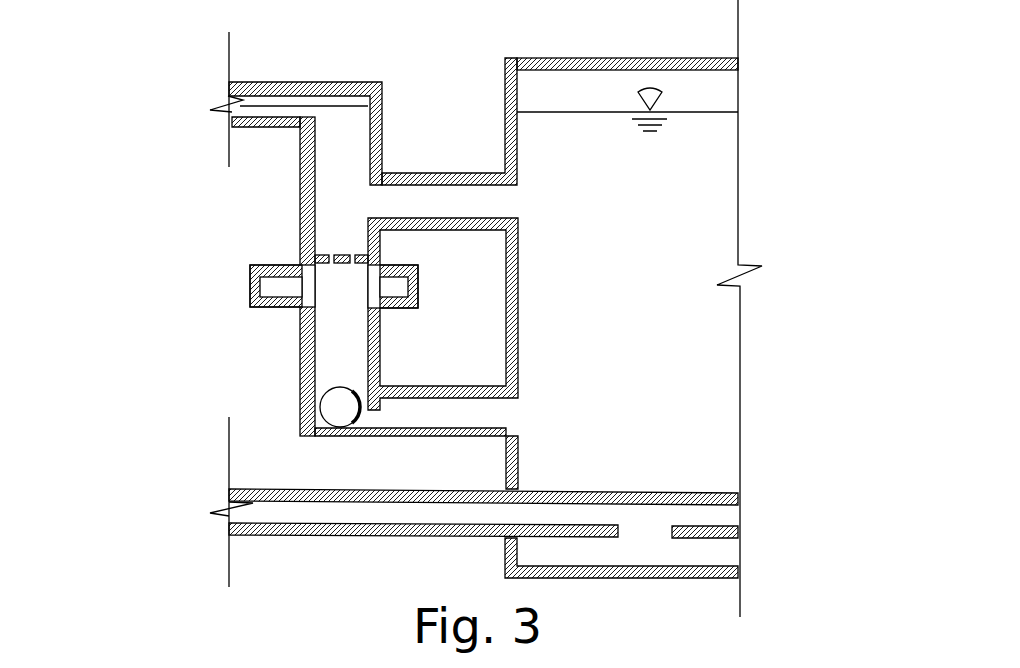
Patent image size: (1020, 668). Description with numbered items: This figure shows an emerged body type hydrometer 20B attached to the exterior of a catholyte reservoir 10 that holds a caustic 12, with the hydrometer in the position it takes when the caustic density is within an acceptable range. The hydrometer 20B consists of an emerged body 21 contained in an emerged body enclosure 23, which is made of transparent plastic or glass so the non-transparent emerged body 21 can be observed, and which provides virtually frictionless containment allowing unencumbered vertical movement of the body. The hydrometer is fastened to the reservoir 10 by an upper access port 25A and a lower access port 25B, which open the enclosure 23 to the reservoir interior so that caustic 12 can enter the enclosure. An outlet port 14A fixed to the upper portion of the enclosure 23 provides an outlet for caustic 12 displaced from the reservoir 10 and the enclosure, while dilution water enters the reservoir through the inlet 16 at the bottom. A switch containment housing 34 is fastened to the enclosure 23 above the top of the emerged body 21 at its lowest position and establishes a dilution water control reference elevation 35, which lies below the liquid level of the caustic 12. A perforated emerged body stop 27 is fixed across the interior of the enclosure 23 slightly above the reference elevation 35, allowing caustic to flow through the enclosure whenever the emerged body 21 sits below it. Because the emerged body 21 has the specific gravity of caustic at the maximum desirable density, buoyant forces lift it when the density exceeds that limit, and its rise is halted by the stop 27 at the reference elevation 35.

The catholyte reservoir 10 is at (707, 72).
The caustic 12 is at (657, 237).
The outlet port 14A is at (308, 100).
The inlet 16 is at (707, 515).
The emerged body type hydrometer 20B is at (273, 193).
The emerged body 21 is at (340, 405).
The emerged body enclosure 23 is at (300, 365).
The access port 25A is at (433, 202).
The access port 25B is at (445, 410).
The emerged body stop 27 is at (335, 253).
The switch containment housing 34 is at (250, 267).
The dilution water control reference elevation 35 is at (240, 283).